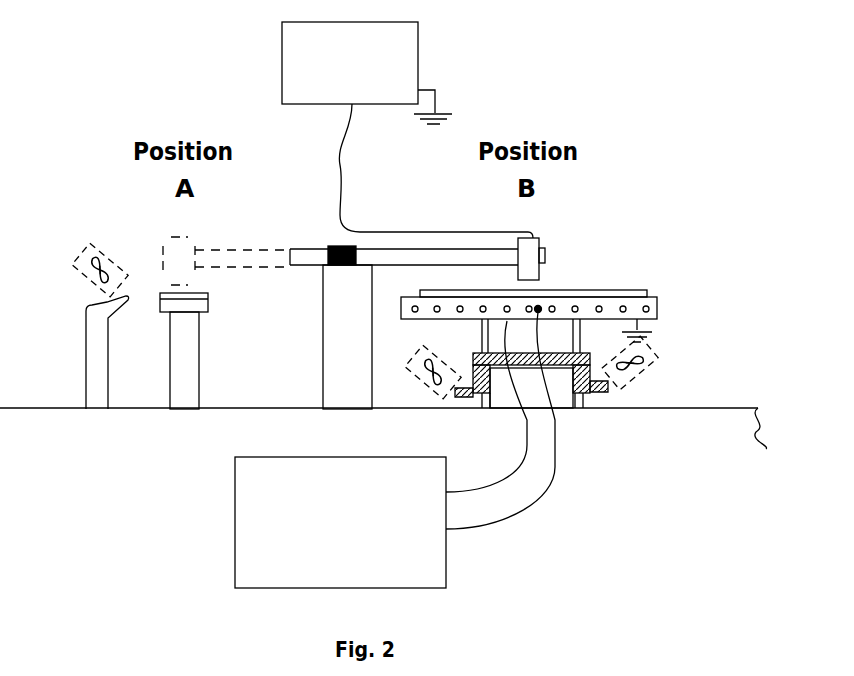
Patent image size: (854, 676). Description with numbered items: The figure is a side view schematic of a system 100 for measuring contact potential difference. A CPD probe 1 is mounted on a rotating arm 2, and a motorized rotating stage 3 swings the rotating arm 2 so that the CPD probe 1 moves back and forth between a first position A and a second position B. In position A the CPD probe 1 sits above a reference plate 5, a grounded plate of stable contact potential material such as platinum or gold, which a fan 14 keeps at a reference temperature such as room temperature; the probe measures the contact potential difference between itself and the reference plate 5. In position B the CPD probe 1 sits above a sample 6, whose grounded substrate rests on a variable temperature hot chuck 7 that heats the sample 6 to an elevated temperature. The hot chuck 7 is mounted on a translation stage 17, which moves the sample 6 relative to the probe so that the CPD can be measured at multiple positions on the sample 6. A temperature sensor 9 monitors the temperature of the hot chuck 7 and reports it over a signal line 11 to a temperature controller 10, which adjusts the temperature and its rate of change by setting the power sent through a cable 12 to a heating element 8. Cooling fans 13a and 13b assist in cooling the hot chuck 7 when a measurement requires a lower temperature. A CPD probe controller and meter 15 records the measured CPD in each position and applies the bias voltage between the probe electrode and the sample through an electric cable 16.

The contact potential difference (CPD) probe 1 is at (182, 277).
The rotating arm 2 is at (402, 262).
The motorized rotating stage 3 is at (315, 304).
The reference plate 5 is at (211, 293).
The sample 6 is at (617, 290).
The variable temperature hot chuck 7 is at (662, 296).
The heating element 8 is at (652, 308).
The temperature sensor 9 is at (552, 295).
The temperature controller 10 is at (417, 567).
The signal line 11 is at (558, 472).
The cable 12 is at (489, 489).
The cooling fan 13a is at (654, 352).
The cooling fan 13b is at (455, 350).
The fan 14 is at (118, 270).
The CPD probe controller and meter 15 is at (395, 60).
The electric cable 16 is at (354, 178).
The translation stage 17 is at (590, 396).
The system 100 is at (40, 493).